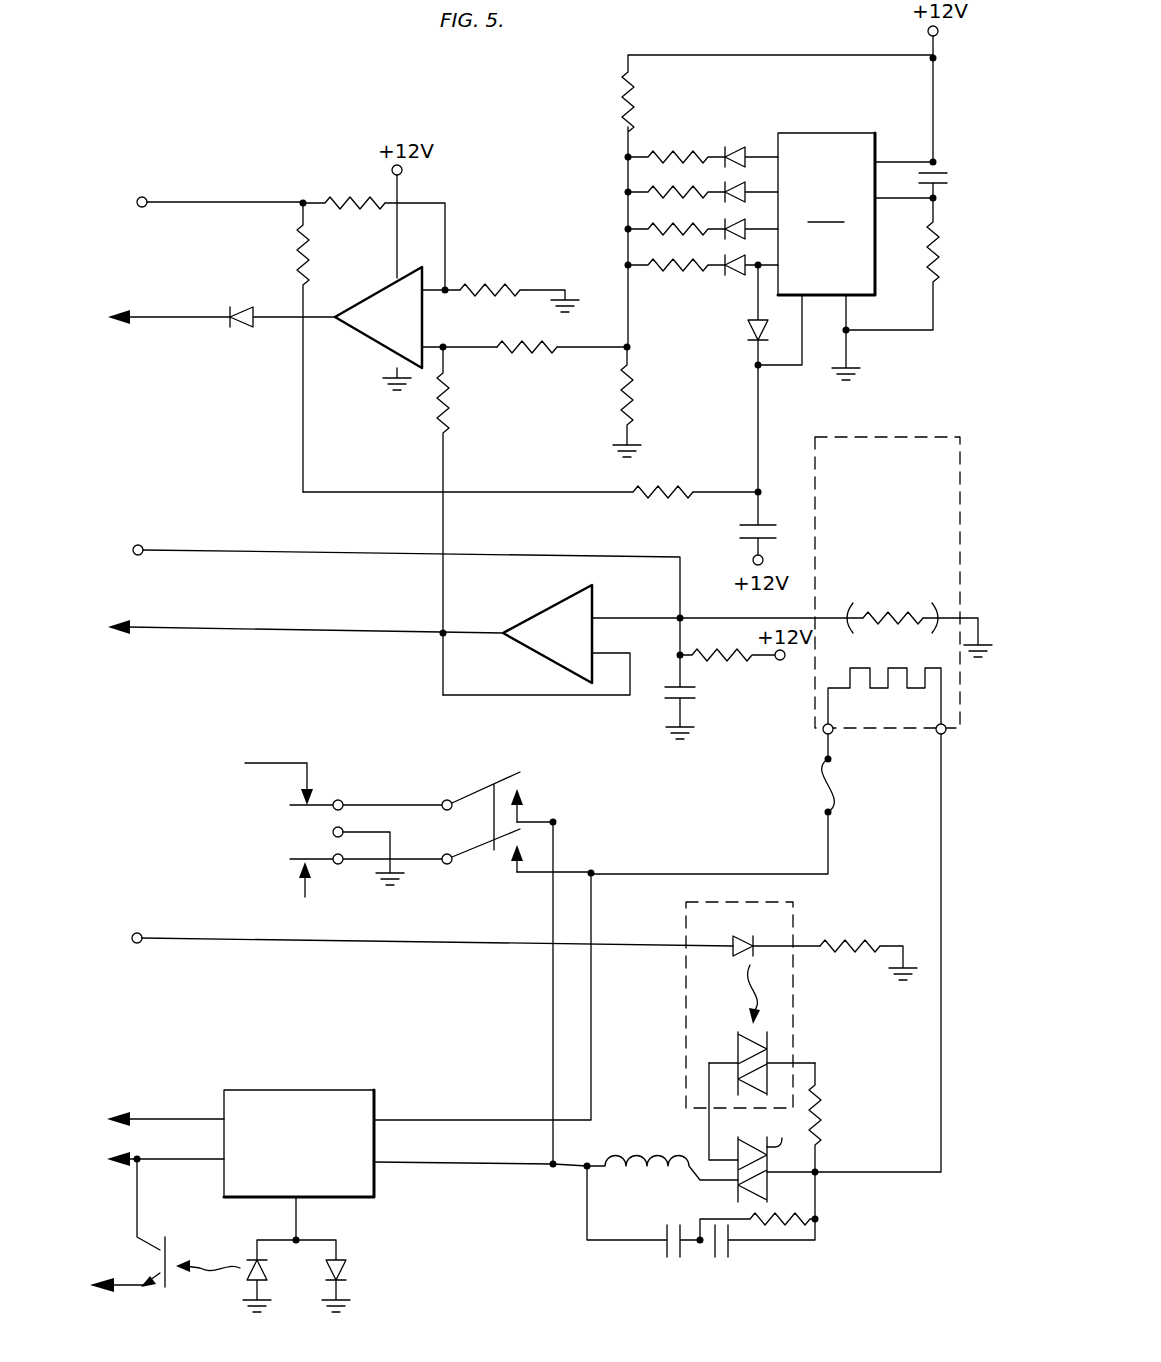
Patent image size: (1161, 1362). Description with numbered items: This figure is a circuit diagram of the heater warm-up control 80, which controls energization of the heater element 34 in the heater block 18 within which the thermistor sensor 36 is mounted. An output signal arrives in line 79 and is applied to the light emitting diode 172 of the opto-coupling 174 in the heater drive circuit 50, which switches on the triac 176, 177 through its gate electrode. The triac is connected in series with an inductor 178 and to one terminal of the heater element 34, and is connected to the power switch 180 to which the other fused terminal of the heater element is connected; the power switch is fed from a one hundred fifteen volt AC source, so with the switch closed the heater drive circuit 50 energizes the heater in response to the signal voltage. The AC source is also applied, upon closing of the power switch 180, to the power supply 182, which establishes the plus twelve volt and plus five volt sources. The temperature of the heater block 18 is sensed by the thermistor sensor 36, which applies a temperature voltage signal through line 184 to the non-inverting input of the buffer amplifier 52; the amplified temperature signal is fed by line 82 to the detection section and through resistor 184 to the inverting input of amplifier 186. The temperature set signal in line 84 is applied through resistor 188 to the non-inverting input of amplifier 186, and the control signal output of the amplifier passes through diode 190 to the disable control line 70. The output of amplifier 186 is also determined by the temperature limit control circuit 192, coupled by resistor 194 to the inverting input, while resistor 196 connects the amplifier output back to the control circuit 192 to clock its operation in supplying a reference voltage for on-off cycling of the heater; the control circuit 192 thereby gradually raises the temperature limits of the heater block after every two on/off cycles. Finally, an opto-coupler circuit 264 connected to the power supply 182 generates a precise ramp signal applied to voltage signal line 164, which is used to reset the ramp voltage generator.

The heater block 18 is at (972, 408).
The heater element 34 is at (877, 690).
The thermistor sensor 36 is at (872, 614).
The heater drive circuit 50 is at (882, 925).
The buffer amplifier 52 is at (534, 645).
The disable control line 70 is at (168, 312).
The line 79 is at (272, 937).
The heater warm-up control 80 is at (520, 150).
The line 82 is at (256, 626).
The line 84 is at (218, 200).
The voltage signal line 164 is at (125, 1282).
The light emitting diode 172 is at (733, 944).
The opto-coupling 174 is at (812, 1038).
The triac 176 is at (738, 1048).
The triac 177 is at (776, 1155).
The inductor 178 is at (640, 1157).
The power switch 180 is at (465, 770).
The power supply 182 is at (360, 1088).
The line and resistor 184 is at (256, 548).
The amplifier 186 is at (363, 335).
The resistor 188 is at (340, 200).
The diode 190 is at (243, 330).
The temperature limit control circuit 192 is at (826, 214).
The resistor 194 is at (525, 356).
The resistor 196 is at (688, 490).
The opto-coupler circuit 264 is at (195, 1216).